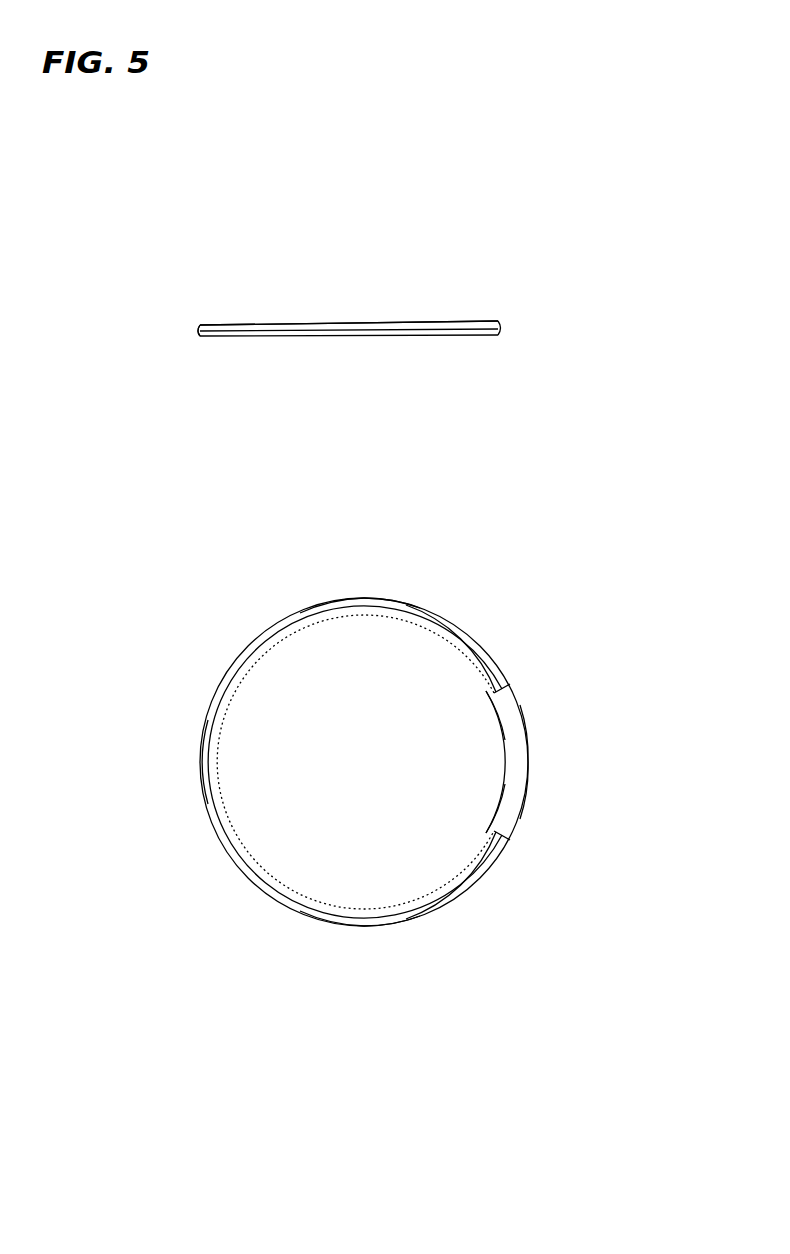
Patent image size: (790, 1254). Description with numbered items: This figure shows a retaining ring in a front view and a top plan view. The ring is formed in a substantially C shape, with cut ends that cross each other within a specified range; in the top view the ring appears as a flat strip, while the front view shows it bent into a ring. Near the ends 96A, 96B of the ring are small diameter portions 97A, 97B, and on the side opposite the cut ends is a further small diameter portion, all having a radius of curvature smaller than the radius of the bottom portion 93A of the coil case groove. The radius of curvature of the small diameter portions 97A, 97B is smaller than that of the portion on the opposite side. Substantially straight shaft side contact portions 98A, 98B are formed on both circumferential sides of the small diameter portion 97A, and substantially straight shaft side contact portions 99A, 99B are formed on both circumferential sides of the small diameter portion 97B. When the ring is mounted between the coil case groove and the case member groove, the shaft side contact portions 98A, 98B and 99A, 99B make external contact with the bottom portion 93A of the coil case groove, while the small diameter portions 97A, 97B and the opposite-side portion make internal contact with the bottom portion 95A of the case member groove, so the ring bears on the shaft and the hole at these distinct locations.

The small diameter portion 97A is at (393, 602).
The small diameter portion 97B is at (395, 925).
The shaft side contact portion 98A is at (470, 645).
The shaft side contact portion 98B is at (337, 617).
The shaft side contact portion 99A is at (457, 878).
The shaft side contact portion 99B is at (327, 908).
The end of the retaining ring 96A is at (513, 690).
The end of the retaining ring 96B is at (513, 837).
The bottom portion of the groove of the coil case 93A is at (553, 712).
The bottom portion of the groove of the case member 95A is at (530, 800).